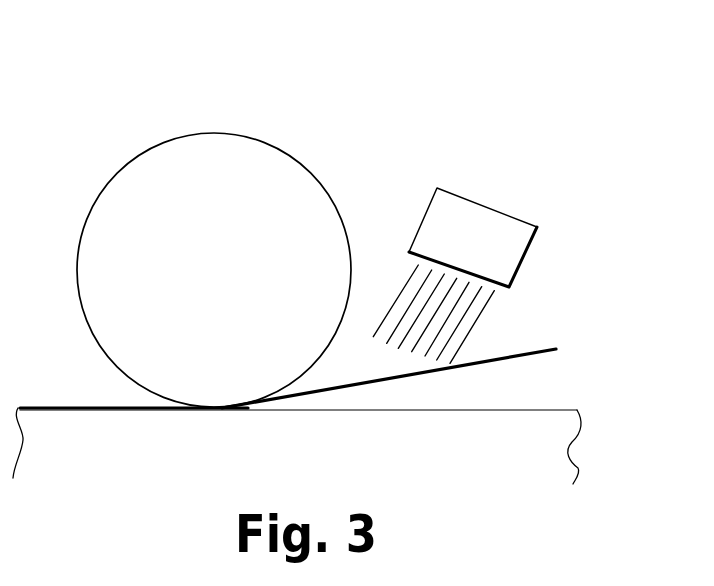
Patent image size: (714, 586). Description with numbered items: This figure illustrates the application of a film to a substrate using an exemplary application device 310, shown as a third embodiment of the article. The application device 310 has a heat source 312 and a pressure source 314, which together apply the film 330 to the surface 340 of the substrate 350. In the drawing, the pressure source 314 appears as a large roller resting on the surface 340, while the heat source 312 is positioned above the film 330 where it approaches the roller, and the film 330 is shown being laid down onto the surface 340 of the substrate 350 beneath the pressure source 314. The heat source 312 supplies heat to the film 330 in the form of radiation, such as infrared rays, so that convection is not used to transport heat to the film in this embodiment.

The application device 310 is at (307, 232).
The heat source 312 is at (482, 228).
The pressure source 314 is at (203, 162).
The film 330 is at (507, 353).
The surface 340 is at (518, 410).
The substrate 350 is at (547, 449).